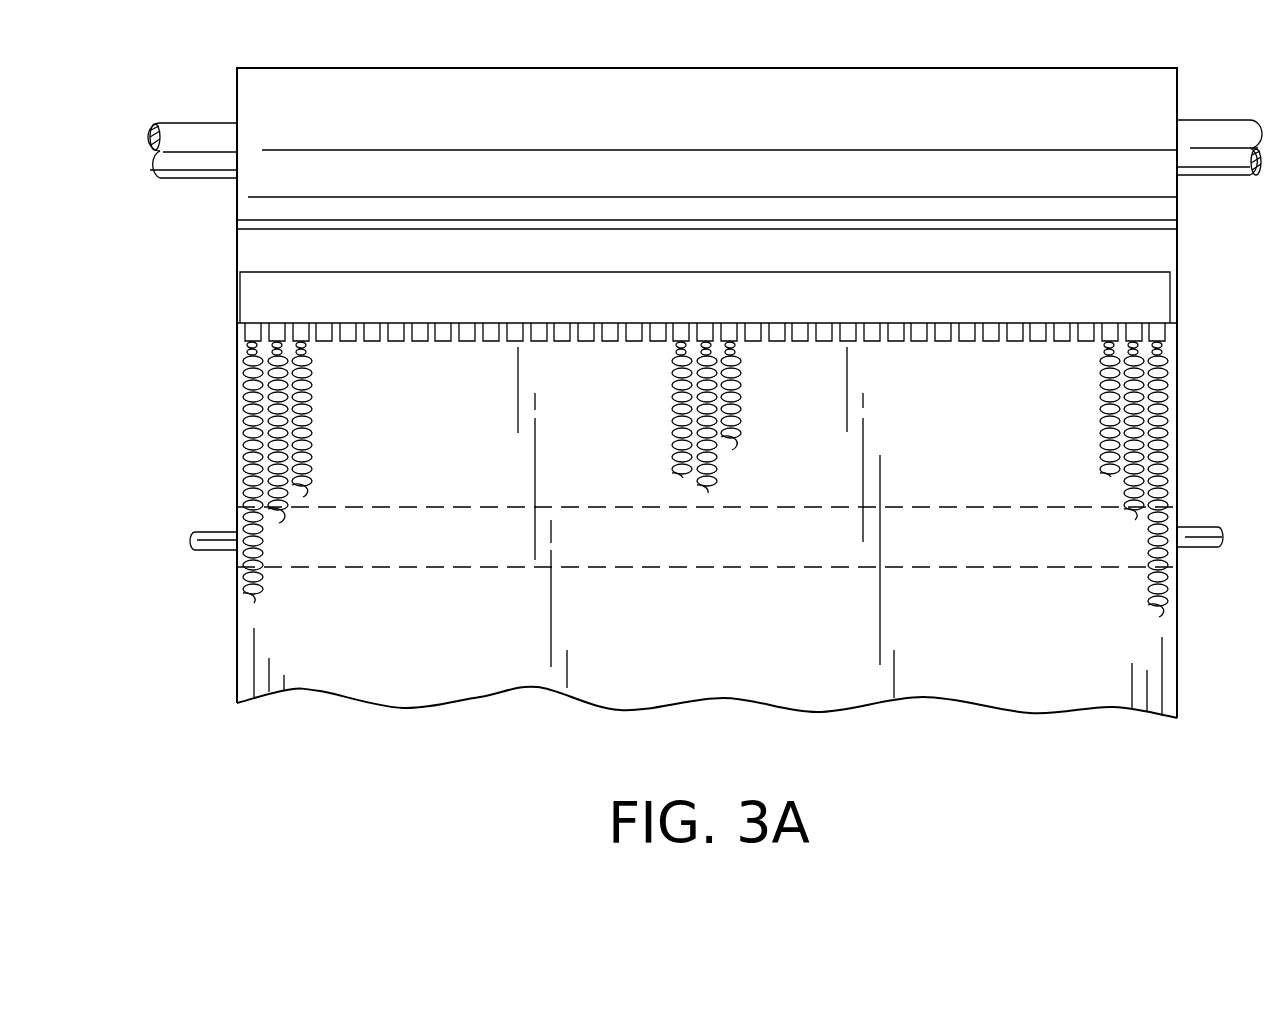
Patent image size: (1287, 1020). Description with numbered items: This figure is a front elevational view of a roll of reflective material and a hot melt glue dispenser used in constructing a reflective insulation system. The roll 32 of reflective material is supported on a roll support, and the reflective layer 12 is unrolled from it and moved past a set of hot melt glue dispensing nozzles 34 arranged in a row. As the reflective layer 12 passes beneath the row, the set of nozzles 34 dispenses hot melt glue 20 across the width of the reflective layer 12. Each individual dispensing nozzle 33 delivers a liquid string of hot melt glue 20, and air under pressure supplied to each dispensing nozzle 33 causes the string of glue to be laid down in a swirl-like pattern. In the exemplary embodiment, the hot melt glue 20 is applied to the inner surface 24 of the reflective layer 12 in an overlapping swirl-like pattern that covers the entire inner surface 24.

The roll of reflective material 32 is at (1150, 100).
The set of hot melt glue dispensing nozzles 34 is at (1152, 307).
The dispensing nozzle 33 is at (277, 327).
The hot melt glue 20 is at (256, 435).
The inner surface 24 is at (260, 686).
The reflective layer 12 is at (1148, 680).